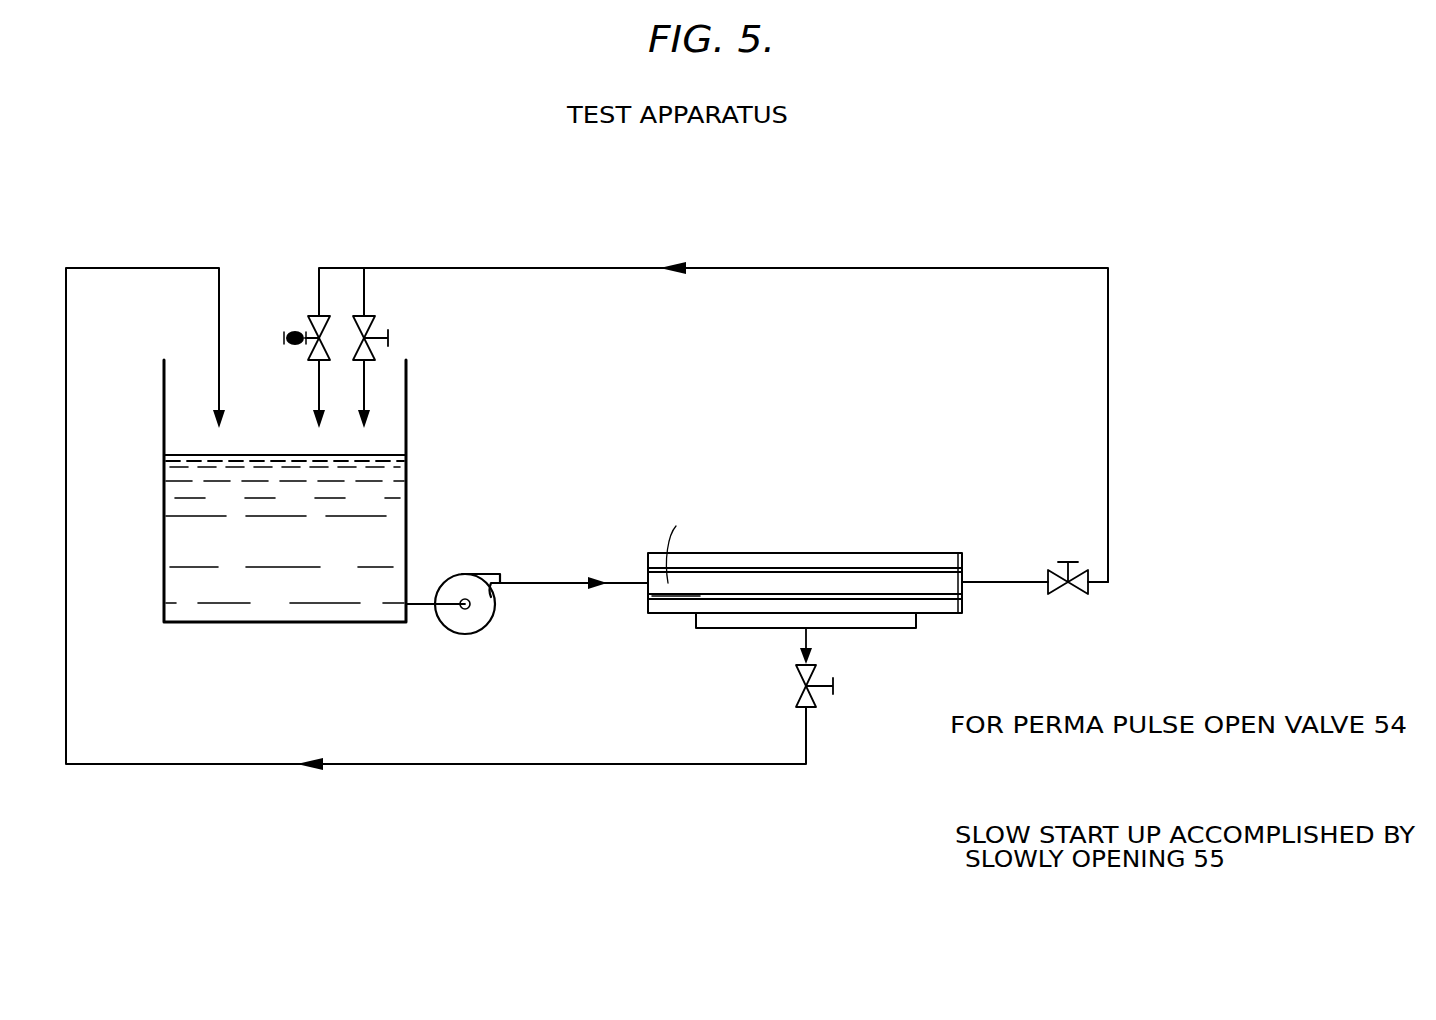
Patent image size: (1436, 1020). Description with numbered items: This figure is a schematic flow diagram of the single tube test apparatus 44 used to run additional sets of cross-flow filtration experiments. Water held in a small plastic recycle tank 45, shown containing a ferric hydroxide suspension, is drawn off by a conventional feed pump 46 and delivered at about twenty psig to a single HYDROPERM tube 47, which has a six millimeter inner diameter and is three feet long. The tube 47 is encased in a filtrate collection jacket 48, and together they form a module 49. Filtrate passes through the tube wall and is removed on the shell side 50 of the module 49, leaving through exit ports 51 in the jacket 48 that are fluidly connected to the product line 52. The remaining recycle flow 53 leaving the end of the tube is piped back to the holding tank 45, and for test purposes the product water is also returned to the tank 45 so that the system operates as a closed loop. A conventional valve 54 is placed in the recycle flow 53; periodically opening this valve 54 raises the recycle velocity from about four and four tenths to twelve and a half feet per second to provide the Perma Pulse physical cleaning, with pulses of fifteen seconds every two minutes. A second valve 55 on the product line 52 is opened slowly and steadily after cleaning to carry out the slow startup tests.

The single tube test apparatus 44 is at (998, 214).
The recycle tank 45 is at (407, 456).
The feed pump 46 is at (464, 573).
The HYDROPERM tube 47 is at (941, 612).
The filtrate collection jacket 48 is at (965, 603).
The module 49 is at (953, 528).
The shell side 50 is at (688, 603).
The exit ports 51 is at (711, 629).
The product line 52 is at (808, 637).
The recycle flow 53 is at (1021, 580).
The valve 54 is at (1076, 591).
The valve 55 is at (797, 678).